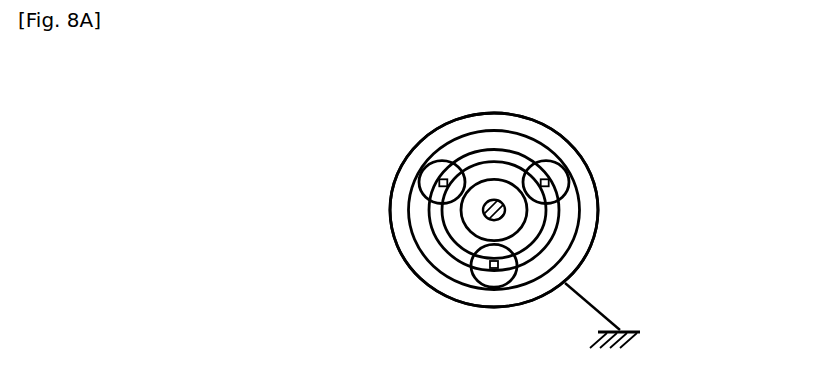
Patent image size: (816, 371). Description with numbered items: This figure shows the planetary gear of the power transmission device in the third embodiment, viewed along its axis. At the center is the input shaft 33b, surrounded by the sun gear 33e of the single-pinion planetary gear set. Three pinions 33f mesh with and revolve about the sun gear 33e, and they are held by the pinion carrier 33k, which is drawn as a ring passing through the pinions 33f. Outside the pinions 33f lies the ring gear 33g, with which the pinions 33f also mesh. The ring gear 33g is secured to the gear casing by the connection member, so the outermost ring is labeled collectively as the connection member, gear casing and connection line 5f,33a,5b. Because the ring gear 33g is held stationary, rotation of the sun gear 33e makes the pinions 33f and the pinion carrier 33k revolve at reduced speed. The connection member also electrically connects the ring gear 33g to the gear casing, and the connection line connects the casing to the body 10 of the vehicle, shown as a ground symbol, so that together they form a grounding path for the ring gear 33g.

The connection member, gear casing and connection line 5f,33a,5b is at (590, 293).
The ring gear 33g is at (463, 126).
The pinion carrier 33k is at (507, 150).
The sun gear 33e is at (518, 217).
The input shaft 33b is at (480, 212).
The pinions 33f is at (560, 173).
The body 10 is at (600, 331).